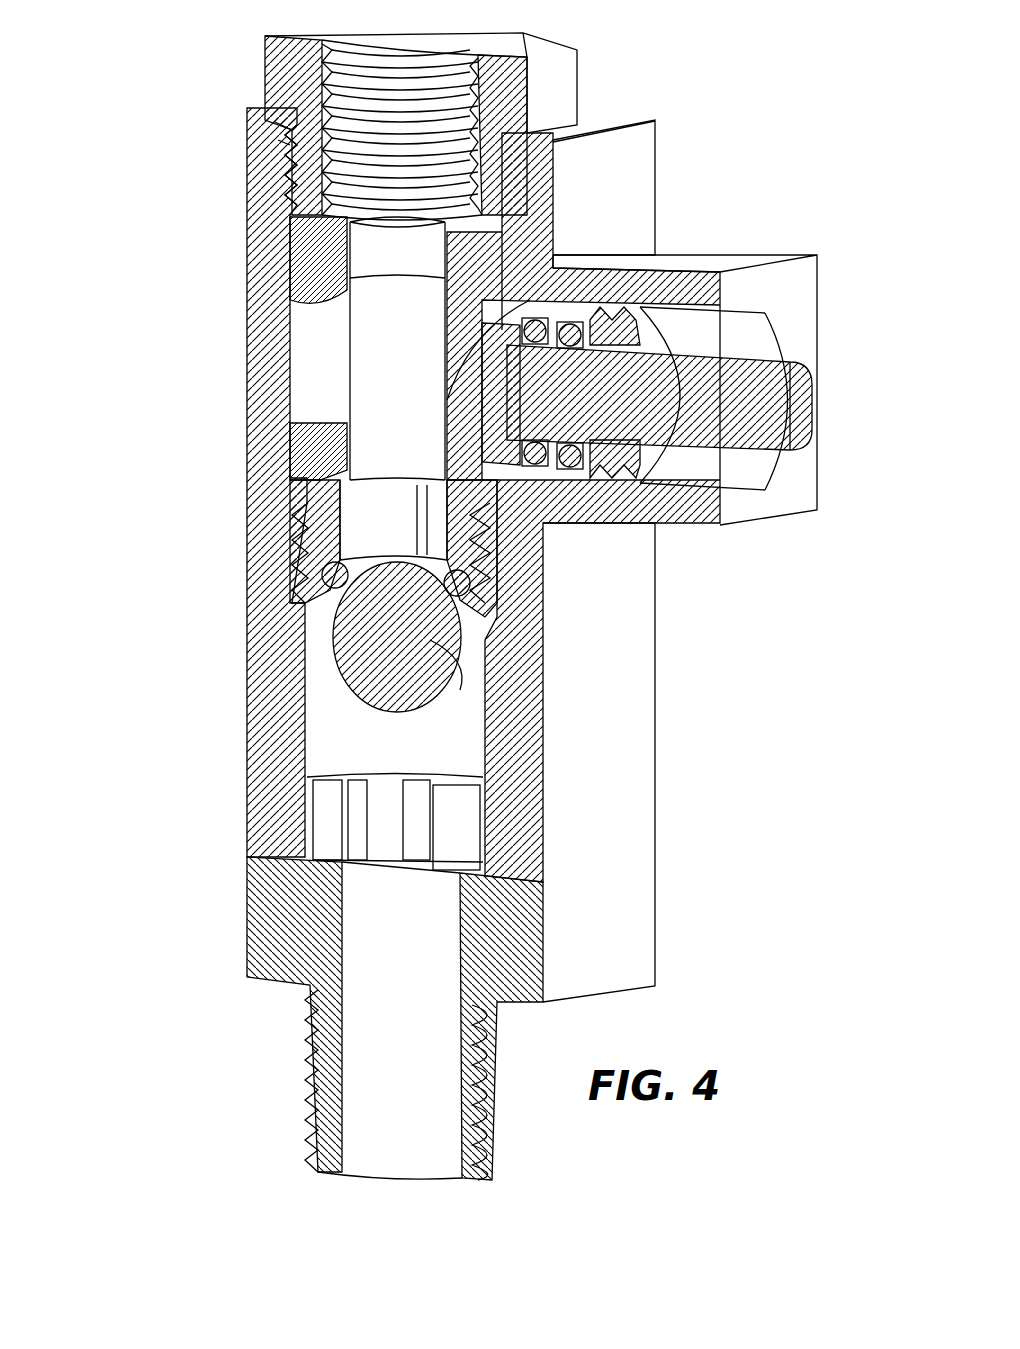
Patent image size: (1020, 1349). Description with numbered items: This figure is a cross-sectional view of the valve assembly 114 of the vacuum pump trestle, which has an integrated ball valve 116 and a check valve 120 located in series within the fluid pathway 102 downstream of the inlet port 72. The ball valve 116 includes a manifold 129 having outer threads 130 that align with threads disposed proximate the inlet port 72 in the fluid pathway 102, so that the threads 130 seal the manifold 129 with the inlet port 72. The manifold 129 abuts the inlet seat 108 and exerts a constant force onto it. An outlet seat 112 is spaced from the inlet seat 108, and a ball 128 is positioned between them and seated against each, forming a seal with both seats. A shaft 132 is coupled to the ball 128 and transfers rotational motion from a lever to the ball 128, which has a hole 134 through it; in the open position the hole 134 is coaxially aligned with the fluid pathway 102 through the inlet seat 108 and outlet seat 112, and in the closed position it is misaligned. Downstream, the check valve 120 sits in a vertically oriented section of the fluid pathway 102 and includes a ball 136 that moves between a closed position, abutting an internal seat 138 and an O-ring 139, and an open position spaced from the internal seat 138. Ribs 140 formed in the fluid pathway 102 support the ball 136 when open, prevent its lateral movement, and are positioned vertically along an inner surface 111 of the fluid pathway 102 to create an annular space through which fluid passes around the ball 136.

The inlet port 72 is at (275, 122).
The fluid pathway 102 is at (300, 293).
The inlet seat 108 is at (560, 248).
The inner surface 111 is at (480, 770).
The outlet seat 112 is at (525, 478).
The valve assembly 114 is at (92, 245).
The ball valve 116 is at (222, 245).
The check valve 120 is at (675, 665).
The ball 128 is at (640, 262).
The manifold 129 is at (558, 77).
The outer threads 130 is at (600, 160).
The shaft 132 is at (793, 405).
The hole 134 is at (370, 392).
The ball 136 is at (430, 655).
The internal seat 138 is at (300, 588).
The O-ring 139 is at (300, 625).
The ribs 140 is at (453, 813).